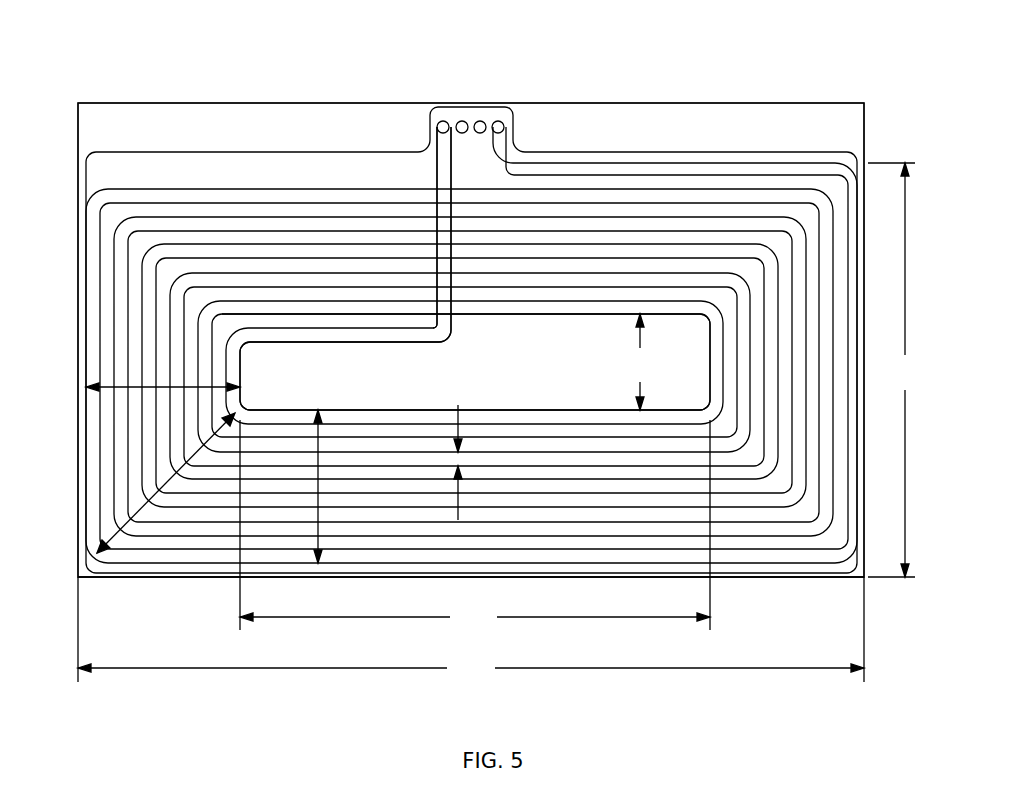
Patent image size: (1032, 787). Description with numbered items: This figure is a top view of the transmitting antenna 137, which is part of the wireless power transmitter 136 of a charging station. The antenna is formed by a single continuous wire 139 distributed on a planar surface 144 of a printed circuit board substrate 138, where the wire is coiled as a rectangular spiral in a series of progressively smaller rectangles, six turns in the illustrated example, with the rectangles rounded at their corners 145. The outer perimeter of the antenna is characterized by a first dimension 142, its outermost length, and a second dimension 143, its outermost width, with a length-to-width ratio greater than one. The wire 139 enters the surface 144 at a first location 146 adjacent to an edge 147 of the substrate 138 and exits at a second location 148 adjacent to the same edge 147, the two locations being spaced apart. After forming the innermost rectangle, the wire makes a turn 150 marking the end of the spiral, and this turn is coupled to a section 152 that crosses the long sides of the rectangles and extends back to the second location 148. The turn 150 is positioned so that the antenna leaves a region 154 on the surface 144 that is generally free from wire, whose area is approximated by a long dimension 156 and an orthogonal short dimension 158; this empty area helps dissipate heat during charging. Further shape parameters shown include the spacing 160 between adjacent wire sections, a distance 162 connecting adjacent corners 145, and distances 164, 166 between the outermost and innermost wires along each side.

The wireless power transmitter 136 is at (762, 38).
The transmitting antenna 137 is at (822, 578).
The substrate 138 is at (278, 103).
The wire 139 is at (375, 490).
The first dimension 142 is at (471, 629).
The second dimension 143 is at (896, 370).
The surface 144 is at (712, 122).
The corners 145 is at (857, 162).
The first location 146 is at (502, 122).
The edge 147 is at (413, 85).
The second location 148 is at (437, 127).
The turn 150 is at (437, 334).
The section 152 is at (441, 173).
The region 154 is at (543, 363).
The long dimension 156 is at (475, 525).
The short dimension 158 is at (638, 362).
The spacing 160 is at (458, 405).
The distance 162 is at (142, 507).
The distance 164 is at (318, 490).
The distance 166 is at (165, 384).